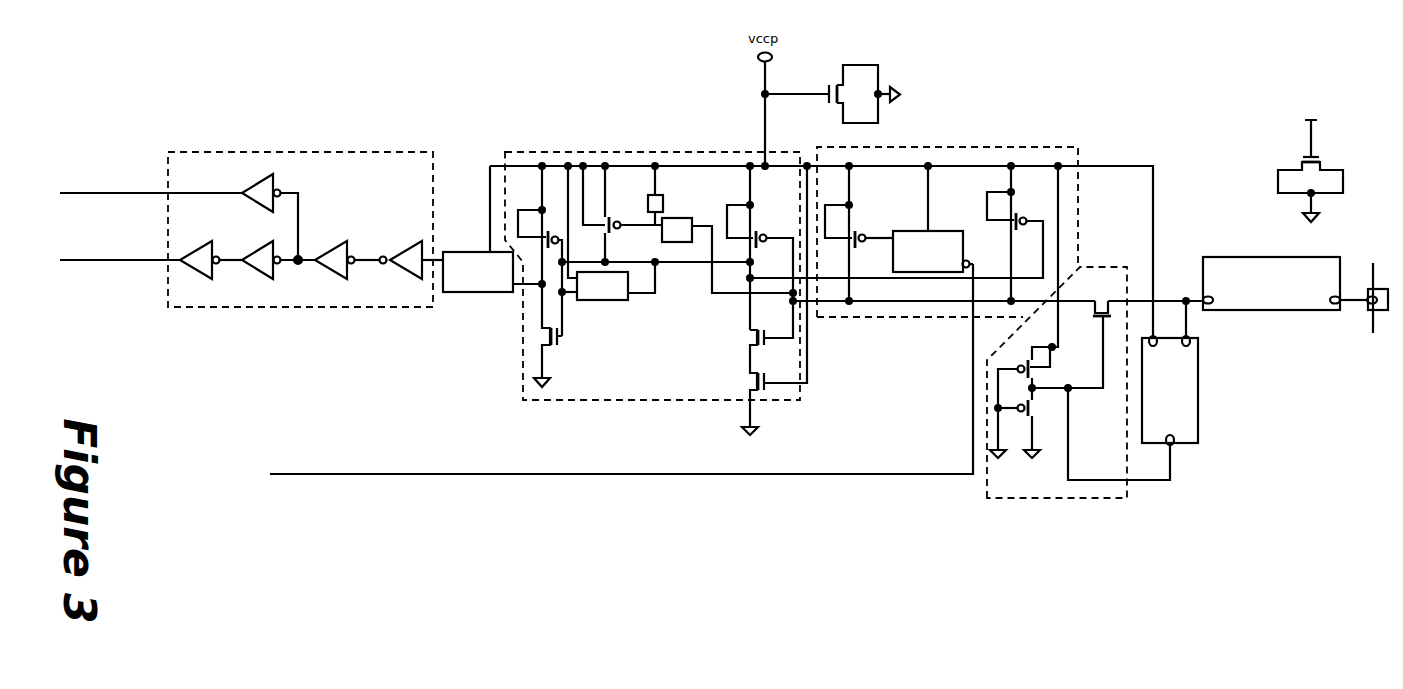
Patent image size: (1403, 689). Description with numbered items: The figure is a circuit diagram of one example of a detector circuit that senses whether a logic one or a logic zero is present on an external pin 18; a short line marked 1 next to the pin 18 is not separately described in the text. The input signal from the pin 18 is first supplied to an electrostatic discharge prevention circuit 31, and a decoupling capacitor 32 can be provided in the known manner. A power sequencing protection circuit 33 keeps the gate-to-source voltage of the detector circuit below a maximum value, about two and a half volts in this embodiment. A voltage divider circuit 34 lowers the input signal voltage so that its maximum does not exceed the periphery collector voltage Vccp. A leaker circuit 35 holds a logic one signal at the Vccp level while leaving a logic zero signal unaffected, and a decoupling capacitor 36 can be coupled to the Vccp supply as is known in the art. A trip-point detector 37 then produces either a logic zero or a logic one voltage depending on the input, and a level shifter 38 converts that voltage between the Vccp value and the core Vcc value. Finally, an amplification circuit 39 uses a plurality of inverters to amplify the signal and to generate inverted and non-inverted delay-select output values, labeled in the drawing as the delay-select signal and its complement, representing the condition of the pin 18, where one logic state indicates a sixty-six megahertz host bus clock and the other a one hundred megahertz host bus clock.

The semiconductor device 1 is at (1372, 323).
The pin 18 is at (1372, 293).
The electrostatic discharge (ESD) prevention circuit 31 is at (1262, 255).
The decoupling capacitor 32 is at (1278, 182).
The power sequencing protection circuit 33 is at (1200, 390).
The voltage divider circuit 34 is at (1080, 500).
The leaker circuit 35 is at (517, 150).
The transistor 36 is at (858, 63).
The trip-point detector 37 is at (522, 367).
The level shifter 38 is at (477, 292).
The amplification circuit 39 is at (337, 148).